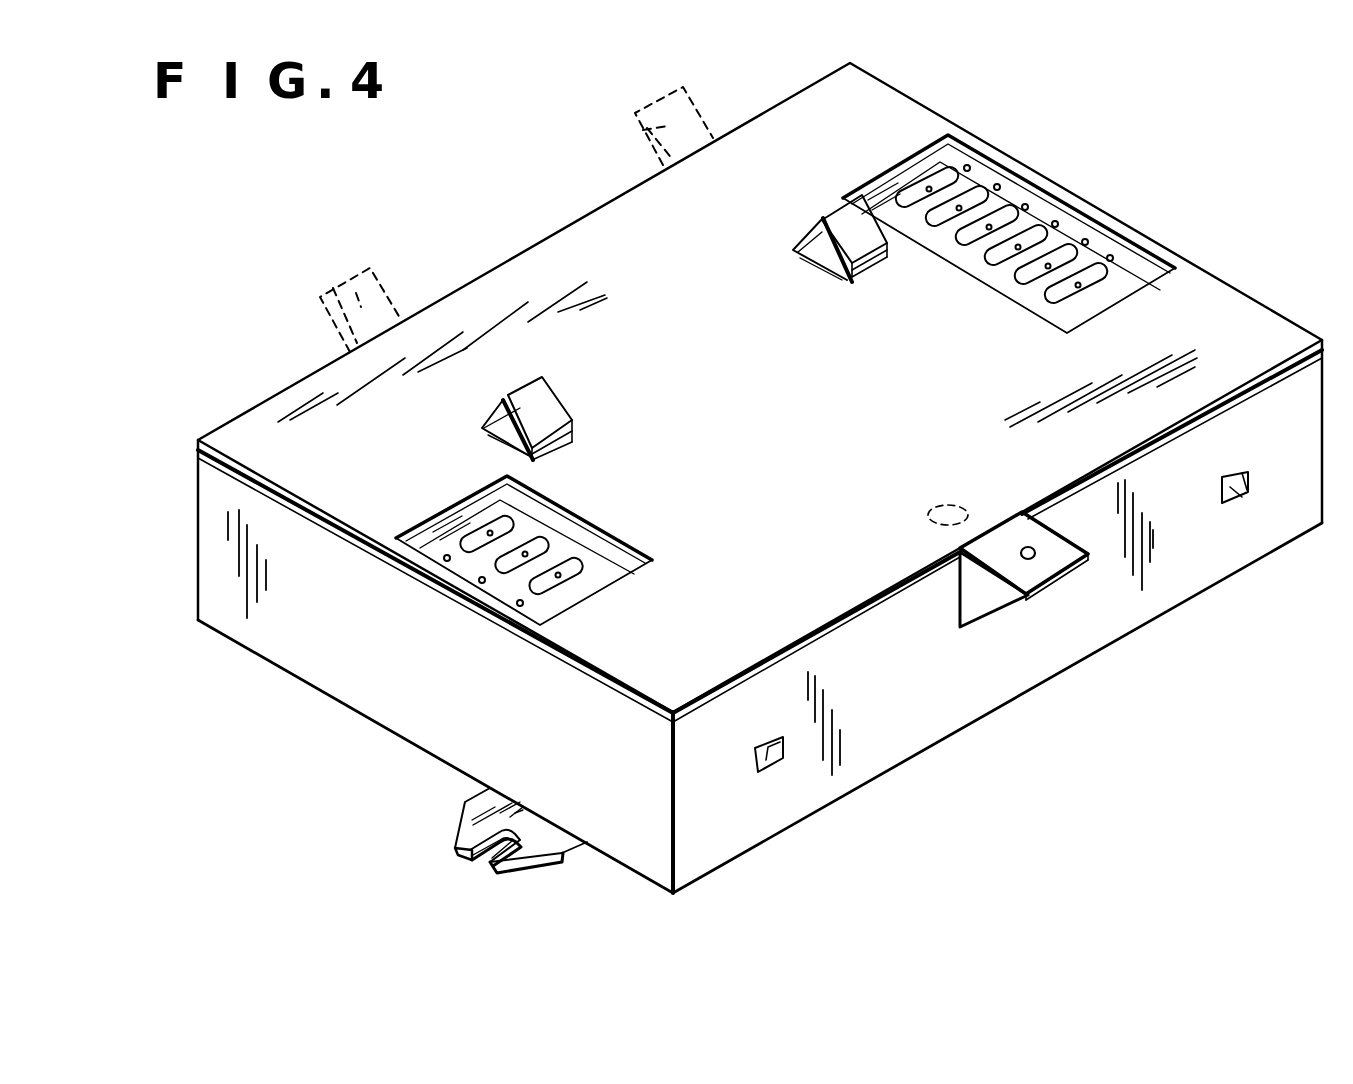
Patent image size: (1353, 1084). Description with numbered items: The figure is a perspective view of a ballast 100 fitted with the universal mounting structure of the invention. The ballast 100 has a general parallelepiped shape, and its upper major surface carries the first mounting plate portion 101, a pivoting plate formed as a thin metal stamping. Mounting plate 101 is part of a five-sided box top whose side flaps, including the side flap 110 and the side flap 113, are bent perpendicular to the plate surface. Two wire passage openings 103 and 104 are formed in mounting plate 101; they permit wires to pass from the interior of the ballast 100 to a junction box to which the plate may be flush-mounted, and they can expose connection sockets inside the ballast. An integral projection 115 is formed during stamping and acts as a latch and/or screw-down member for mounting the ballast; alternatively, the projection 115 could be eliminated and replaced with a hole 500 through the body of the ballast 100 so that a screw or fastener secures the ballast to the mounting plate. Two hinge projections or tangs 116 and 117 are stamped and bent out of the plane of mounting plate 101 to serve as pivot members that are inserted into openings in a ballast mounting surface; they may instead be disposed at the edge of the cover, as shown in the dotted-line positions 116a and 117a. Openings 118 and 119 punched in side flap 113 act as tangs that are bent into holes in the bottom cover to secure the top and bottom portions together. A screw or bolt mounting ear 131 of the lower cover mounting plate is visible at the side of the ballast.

The ballast 100 is at (270, 390).
The first mounting plate portion 101 is at (906, 433).
The wire passage opening 103 is at (592, 530).
The wire passage opening 104 is at (1040, 310).
The side flap 110 is at (412, 658).
The side flap 113 is at (935, 688).
The integral projection 115 is at (1050, 568).
The hinge projection (tang) 116 is at (538, 408).
The dotted-line position of hinge projection 116a is at (347, 278).
The hinge projection (tang) 117 is at (847, 232).
The dotted-line position of hinge projection 117a is at (643, 130).
The opening (tang) 118 is at (772, 763).
The opening (tang) 119 is at (1238, 500).
The screw or bolt mounting ear 131 is at (480, 815).
The hole 500 is at (928, 516).